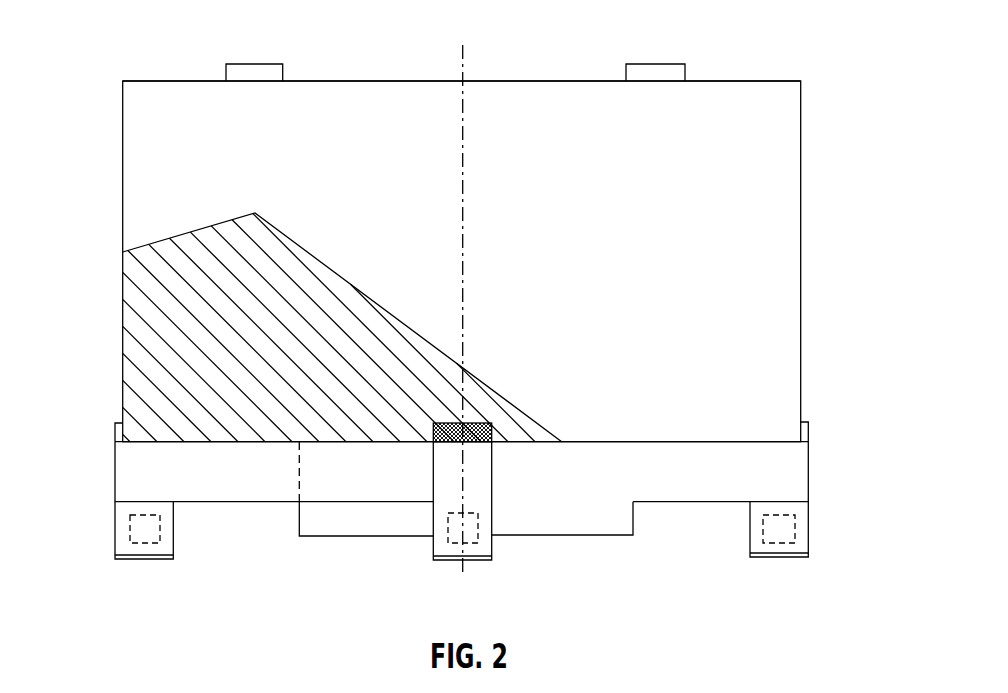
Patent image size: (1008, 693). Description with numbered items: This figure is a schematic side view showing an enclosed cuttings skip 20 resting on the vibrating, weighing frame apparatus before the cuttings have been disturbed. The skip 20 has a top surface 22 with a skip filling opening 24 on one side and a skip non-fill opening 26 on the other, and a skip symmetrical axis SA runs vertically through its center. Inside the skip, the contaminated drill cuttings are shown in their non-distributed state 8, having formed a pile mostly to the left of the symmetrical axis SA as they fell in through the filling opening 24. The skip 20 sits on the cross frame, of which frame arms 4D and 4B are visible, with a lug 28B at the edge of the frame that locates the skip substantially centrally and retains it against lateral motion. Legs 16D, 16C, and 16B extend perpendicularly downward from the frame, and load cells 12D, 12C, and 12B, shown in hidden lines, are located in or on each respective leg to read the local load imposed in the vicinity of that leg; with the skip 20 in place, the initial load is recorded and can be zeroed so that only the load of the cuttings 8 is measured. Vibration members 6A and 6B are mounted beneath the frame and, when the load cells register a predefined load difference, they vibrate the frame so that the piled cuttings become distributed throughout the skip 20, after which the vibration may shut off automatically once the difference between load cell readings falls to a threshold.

The skip 20 is at (803, 262).
The top surface 22 is at (741, 80).
The skip filling opening 24 is at (255, 63).
The skip non-fill opening 26 is at (655, 63).
The skip symmetrical axis SA is at (466, 67).
The non-distributed state 8 is at (130, 287).
The lug 28B is at (812, 432).
The frame arm 4D is at (121, 472).
The frame arm 4B is at (803, 470).
The leg 16D is at (115, 540).
The load cell 12D is at (160, 543).
The vibration member 6A is at (383, 525).
The leg 16C is at (487, 547).
The load cell 12C is at (468, 542).
The vibration member 6B is at (585, 525).
The leg 16B is at (808, 530).
The load cell 12B is at (793, 537).